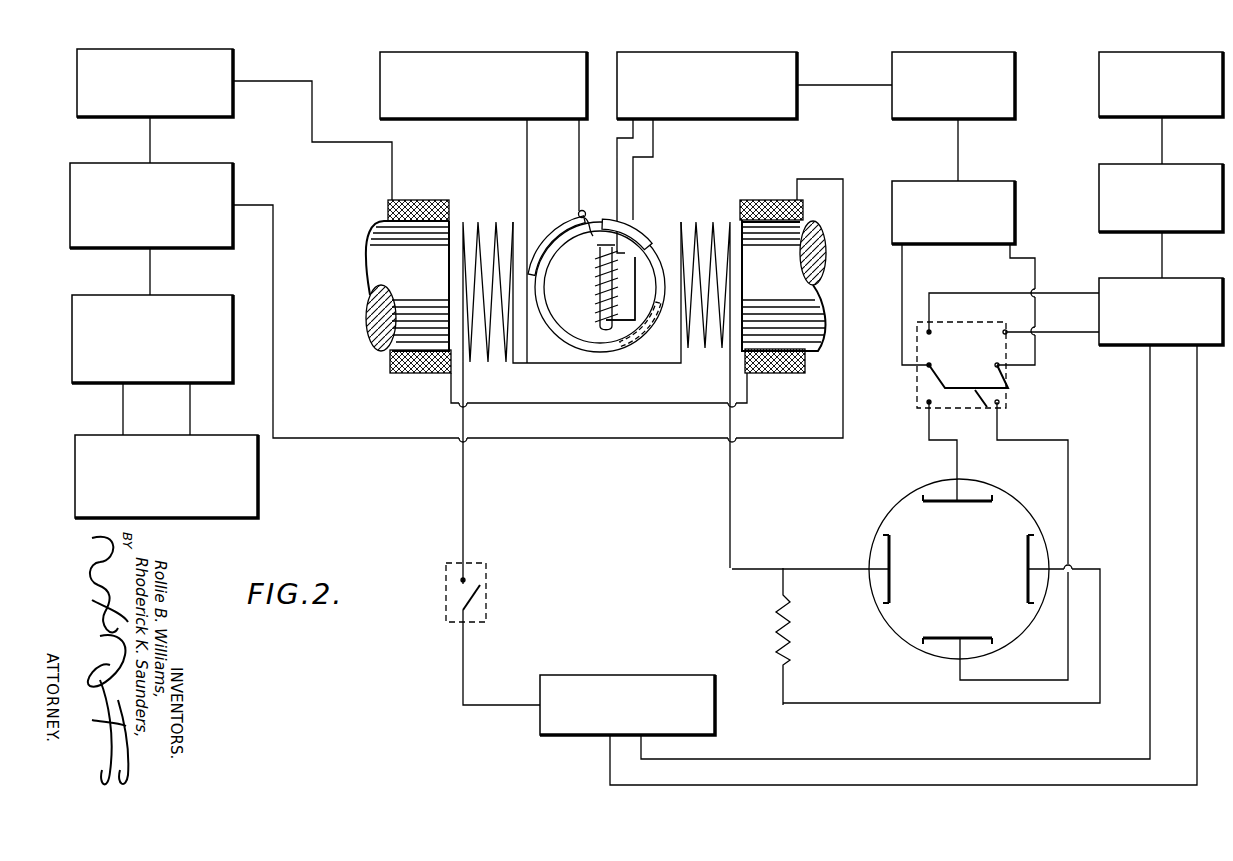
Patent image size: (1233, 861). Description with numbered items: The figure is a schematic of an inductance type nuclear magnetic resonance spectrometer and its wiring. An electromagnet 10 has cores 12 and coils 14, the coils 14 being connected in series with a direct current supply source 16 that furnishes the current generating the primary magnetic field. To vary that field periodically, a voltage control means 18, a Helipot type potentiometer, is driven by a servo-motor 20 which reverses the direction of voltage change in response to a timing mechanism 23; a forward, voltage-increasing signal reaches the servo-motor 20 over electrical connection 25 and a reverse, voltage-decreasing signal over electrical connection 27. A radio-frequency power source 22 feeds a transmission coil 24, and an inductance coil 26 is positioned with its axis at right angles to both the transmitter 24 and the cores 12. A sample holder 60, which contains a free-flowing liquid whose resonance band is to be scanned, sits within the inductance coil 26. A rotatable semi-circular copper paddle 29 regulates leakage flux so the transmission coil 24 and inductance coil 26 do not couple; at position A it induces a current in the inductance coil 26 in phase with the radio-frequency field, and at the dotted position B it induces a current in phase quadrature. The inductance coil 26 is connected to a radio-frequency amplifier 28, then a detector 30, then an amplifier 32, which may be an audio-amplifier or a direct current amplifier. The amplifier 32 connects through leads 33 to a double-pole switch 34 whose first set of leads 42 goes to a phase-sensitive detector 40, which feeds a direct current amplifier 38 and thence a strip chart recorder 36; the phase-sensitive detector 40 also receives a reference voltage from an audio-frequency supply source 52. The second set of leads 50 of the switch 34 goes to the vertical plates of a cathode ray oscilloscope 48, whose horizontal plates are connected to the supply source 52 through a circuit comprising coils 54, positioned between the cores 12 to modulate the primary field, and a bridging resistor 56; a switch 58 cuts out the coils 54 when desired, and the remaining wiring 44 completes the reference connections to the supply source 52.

The electromagnet 10 is at (341, 78).
The cores 12 is at (781, 294).
The coils 14 is at (408, 201).
The direct current supply source 16 is at (208, 56).
The voltage control means 18 is at (216, 170).
The servo-motor 20 is at (220, 303).
The radio-frequency power source 22 is at (526, 60).
The timing mechanism 23 is at (248, 482).
The transmission coil 24 is at (546, 340).
The electrical connection 25 is at (190, 414).
The inductance coil 26 is at (626, 312).
The electrical connection 27 is at (123, 414).
The radio-frequency amplifier 28 is at (733, 60).
The paddle 29 is at (582, 213).
The detector 30 is at (958, 60).
The amplifier 32 is at (965, 188).
The leads 33 is at (1035, 266).
The double-pole switch 34 is at (932, 381).
The strip chart recorder 36 is at (1151, 60).
The direct current amplifier 38 is at (1112, 168).
The phase-sensitive detector 40 is at (1114, 284).
The leads 42 is at (1054, 349).
The audio frequency reference leads 44 is at (918, 790).
The cathode ray oscilloscope 48 is at (893, 509).
The leads 50 is at (1009, 423).
The audio-frequency supply source 52 is at (632, 683).
The coils 54 is at (720, 216).
The bridging resistor 56 is at (788, 626).
The switch 58 is at (452, 597).
The sample holder 60 is at (596, 270).
The paddle position A is at (567, 222).
The paddle position B is at (638, 333).